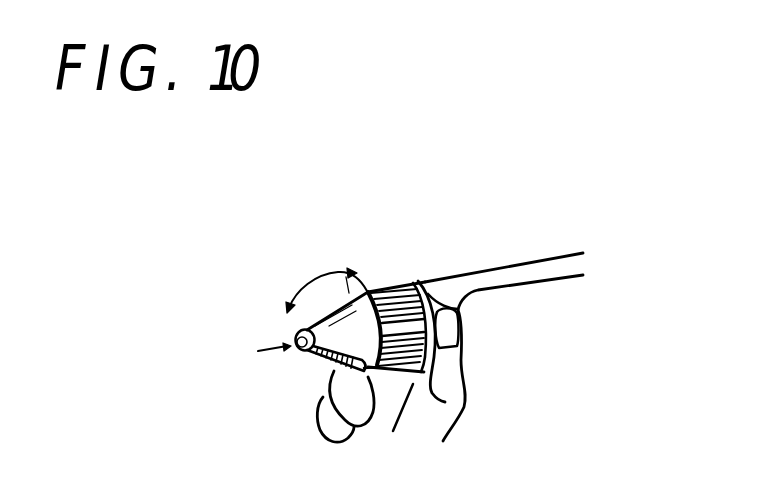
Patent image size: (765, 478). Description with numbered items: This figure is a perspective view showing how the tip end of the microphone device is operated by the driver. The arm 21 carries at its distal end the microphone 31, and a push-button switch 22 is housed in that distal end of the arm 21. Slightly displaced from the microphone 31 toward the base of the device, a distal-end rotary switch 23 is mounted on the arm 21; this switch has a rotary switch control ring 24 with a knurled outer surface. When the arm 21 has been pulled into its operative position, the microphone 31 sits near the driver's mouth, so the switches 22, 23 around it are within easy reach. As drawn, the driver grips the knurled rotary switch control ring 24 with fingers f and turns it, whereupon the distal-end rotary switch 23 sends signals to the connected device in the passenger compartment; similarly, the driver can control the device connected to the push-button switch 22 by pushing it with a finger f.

The arm 21 is at (528, 272).
The push-button switch 22 is at (298, 338).
The distal-end rotary switch 23 is at (438, 288).
The rotary switch control ring 24 is at (397, 288).
The microphone 31 is at (323, 361).
The fingers f is at (471, 366).